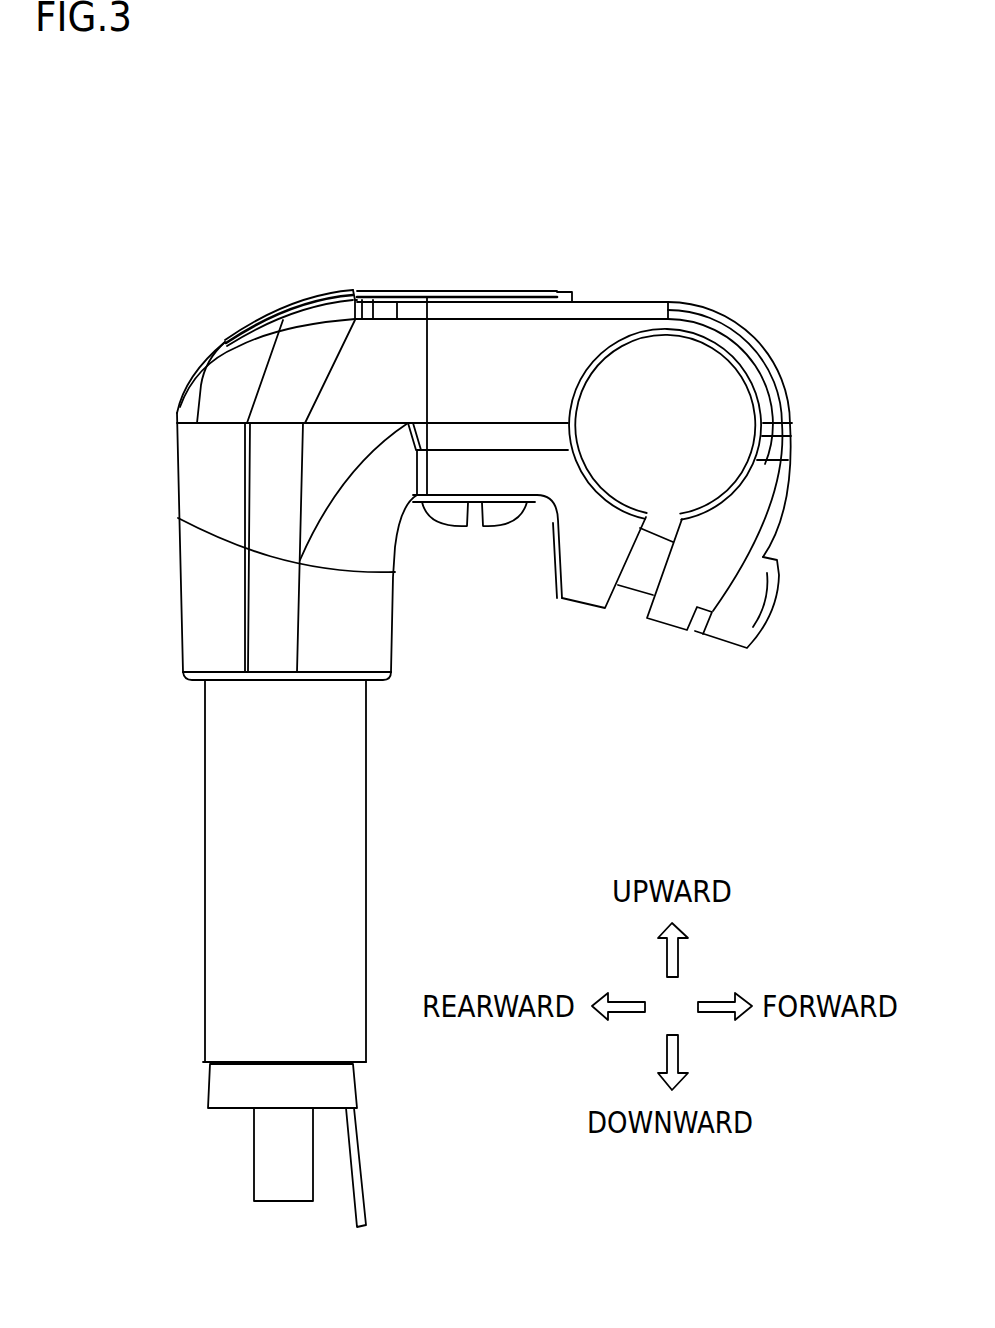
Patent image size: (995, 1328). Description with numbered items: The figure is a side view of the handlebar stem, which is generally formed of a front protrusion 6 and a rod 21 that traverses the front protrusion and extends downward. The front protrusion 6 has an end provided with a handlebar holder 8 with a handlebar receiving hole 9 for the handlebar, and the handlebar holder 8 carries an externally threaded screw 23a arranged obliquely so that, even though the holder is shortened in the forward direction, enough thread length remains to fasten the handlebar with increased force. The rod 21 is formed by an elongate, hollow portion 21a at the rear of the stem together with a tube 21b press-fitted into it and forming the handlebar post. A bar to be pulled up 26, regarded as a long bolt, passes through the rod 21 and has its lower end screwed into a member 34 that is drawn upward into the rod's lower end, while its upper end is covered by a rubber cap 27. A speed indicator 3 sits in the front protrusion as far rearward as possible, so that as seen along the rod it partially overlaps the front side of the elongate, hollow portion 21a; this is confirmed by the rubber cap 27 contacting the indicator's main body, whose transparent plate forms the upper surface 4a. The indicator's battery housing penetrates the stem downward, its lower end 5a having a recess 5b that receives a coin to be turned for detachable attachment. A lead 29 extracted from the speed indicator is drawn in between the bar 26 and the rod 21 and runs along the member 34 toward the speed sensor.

The speed indicator 3 is at (580, 282).
The front protrusion 6 is at (817, 142).
The rubber cap 27 is at (288, 294).
The upper surface 4a is at (482, 291).
The handlebar receiving hole 9 is at (700, 335).
The elongate, hollow portion 21a is at (208, 512).
The rod 21 is at (60, 542).
The tube 21b is at (223, 725).
The lower end 5a is at (493, 527).
The recess 5b is at (466, 527).
The handlebar holder 8 is at (640, 601).
The screw 23a is at (747, 615).
The member 34 is at (230, 1085).
The bar to be pulled up 26 is at (273, 1174).
The lead 29 is at (363, 1160).